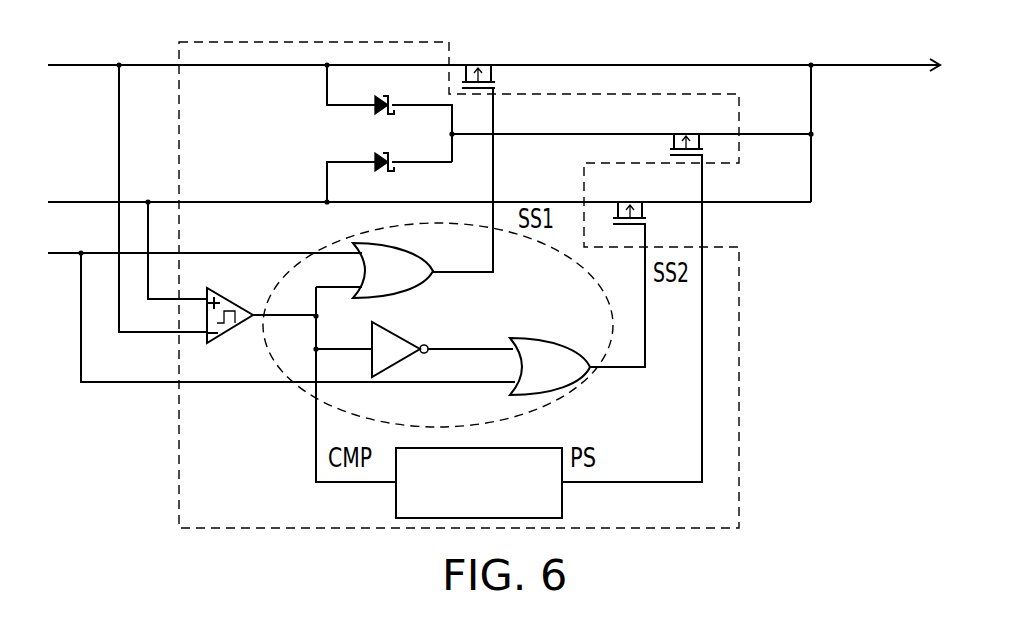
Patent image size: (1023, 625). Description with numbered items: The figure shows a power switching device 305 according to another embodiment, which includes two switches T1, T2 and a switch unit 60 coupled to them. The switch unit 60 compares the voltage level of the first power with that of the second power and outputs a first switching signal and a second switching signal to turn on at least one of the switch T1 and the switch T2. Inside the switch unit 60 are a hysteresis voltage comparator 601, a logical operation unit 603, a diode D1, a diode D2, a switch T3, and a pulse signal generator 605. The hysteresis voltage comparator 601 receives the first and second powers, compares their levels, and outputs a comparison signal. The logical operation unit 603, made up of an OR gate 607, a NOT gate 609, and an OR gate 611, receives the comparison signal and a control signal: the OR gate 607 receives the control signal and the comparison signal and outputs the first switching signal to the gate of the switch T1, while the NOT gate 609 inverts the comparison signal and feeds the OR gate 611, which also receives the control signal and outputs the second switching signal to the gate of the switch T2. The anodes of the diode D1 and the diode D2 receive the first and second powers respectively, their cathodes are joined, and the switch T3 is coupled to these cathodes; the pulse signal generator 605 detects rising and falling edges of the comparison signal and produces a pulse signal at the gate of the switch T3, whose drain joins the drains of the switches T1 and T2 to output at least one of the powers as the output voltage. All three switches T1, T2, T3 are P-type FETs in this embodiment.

The power switching device 305 is at (918, 522).
The switch unit 60 is at (227, 42).
The hysteresis voltage comparator 601 is at (245, 321).
The logical operation unit 603 is at (459, 325).
The pulse signal generator 605 is at (562, 497).
The OR gate 607 is at (417, 288).
The NOT gate 609 is at (405, 340).
The OR gate 611 is at (530, 338).
The switch T1 is at (464, 150).
The switch T2 is at (618, 269).
The switch T3 is at (632, 292).
The diode D1 is at (389, 112).
The diode D2 is at (389, 162).